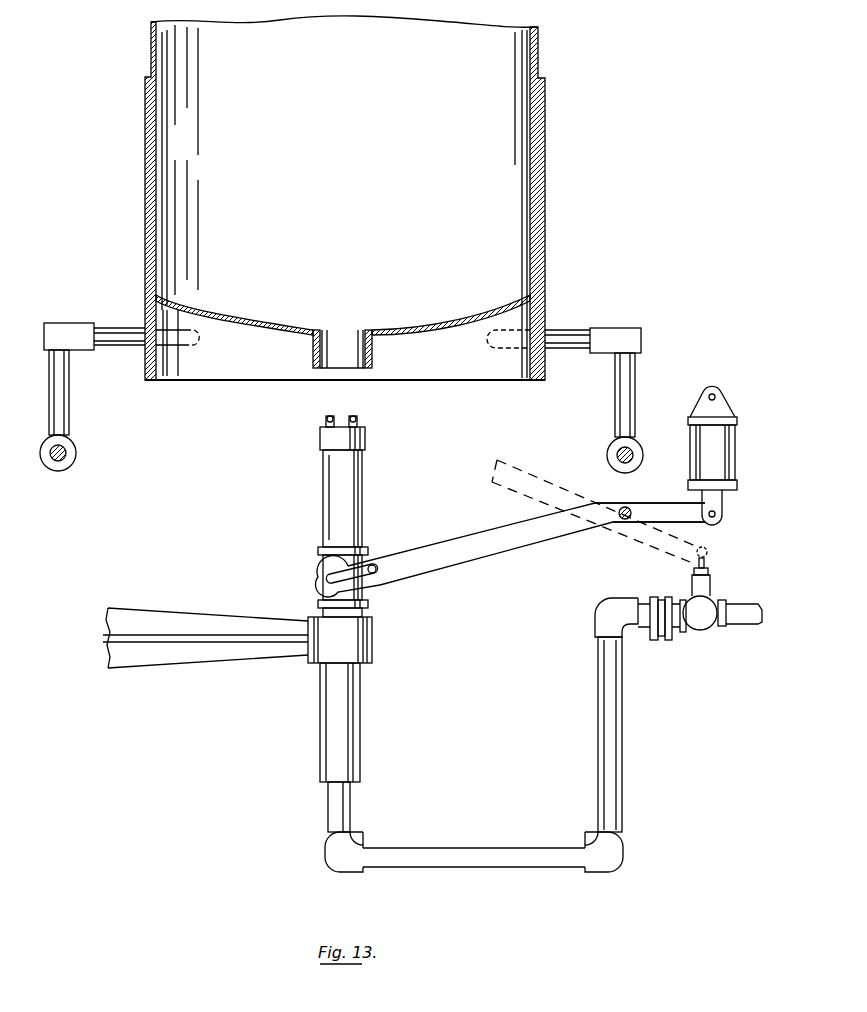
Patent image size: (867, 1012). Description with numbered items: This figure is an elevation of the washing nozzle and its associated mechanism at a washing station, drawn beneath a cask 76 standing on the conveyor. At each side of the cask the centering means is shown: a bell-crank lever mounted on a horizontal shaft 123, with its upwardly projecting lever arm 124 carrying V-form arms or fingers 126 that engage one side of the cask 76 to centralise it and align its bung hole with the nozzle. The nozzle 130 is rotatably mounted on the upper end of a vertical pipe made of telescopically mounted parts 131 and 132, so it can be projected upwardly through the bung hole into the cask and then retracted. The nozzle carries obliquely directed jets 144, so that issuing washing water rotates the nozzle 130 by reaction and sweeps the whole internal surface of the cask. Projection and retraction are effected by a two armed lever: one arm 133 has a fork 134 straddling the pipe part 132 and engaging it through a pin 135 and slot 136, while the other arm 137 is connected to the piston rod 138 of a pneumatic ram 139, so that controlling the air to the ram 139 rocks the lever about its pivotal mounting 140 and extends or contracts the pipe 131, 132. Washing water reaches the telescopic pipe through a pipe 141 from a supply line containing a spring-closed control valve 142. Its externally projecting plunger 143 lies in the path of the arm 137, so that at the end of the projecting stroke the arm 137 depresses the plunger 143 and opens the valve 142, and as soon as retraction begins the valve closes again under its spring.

The cask 76 is at (545, 172).
The V-form arms or fingers 126 is at (113, 333).
The upwardly projecting lever arm 124 is at (68, 396).
The horizontal shaft 123 is at (72, 451).
The jets 144 is at (356, 417).
The nozzle 130 is at (320, 440).
The telescopic pipe part 132 is at (328, 512).
The pin 135 is at (332, 570).
The fork 134 is at (320, 584).
The slot 136 is at (376, 578).
The lever arm 133 is at (466, 558).
The pivotal mounting 140 is at (622, 520).
The lever arm 137 is at (700, 523).
The piston rod 138 is at (722, 498).
The pneumatic ram 139 is at (736, 451).
The plunger 143 is at (708, 563).
The control valve 142 is at (700, 635).
The telescopic pipe part 131 is at (333, 712).
The pipe 141 is at (512, 868).